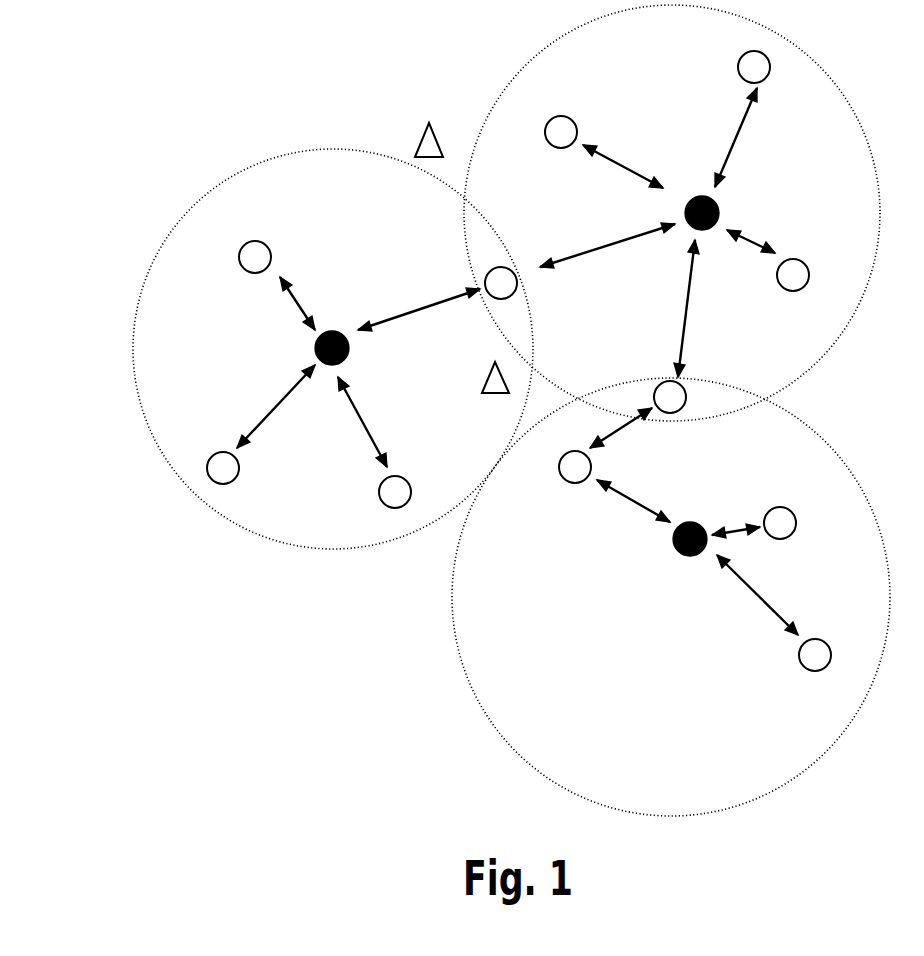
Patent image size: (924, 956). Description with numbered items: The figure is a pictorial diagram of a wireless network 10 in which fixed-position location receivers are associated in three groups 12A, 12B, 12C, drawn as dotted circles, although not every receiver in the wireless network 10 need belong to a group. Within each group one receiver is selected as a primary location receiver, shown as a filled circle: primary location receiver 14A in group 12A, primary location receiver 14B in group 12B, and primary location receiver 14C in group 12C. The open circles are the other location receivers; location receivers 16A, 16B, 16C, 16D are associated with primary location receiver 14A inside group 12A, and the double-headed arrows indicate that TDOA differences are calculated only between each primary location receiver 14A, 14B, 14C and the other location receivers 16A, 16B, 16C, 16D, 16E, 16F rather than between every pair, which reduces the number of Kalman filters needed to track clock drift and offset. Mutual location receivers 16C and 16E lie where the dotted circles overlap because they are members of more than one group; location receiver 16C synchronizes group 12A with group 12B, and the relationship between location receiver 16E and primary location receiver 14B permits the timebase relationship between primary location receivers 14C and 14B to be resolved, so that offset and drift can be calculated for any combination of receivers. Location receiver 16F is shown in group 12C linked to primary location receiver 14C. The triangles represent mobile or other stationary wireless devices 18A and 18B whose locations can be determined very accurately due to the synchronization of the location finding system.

The wireless network 10 is at (188, 117).
The group 12A is at (246, 349).
The group 12B is at (581, 87).
The group 12C is at (568, 655).
The primary location receiver 14A is at (350, 358).
The primary location receiver 14B is at (704, 231).
The primary location receiver 14C is at (673, 545).
The location receiver 16A is at (255, 241).
The location receiver 16B is at (218, 452).
The mutual location receiver 16C is at (501, 267).
The location receiver 16D is at (405, 476).
The mutual location receiver 16E is at (684, 389).
The location receiver 16F is at (566, 483).
The wireless device 18A is at (473, 380).
The wireless device 18B is at (430, 125).